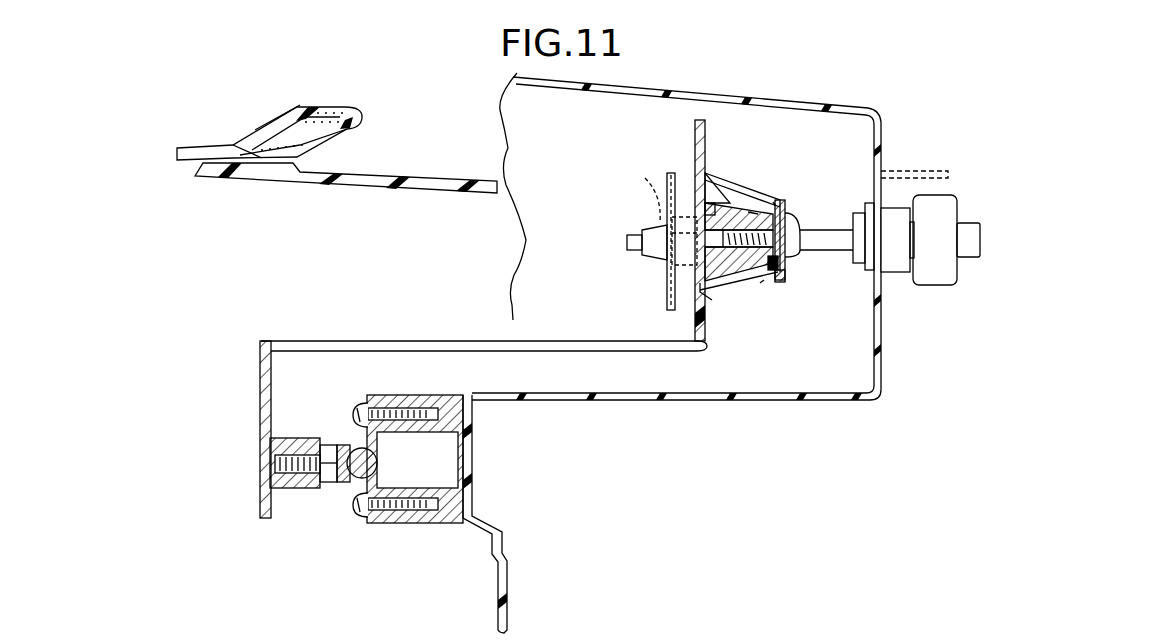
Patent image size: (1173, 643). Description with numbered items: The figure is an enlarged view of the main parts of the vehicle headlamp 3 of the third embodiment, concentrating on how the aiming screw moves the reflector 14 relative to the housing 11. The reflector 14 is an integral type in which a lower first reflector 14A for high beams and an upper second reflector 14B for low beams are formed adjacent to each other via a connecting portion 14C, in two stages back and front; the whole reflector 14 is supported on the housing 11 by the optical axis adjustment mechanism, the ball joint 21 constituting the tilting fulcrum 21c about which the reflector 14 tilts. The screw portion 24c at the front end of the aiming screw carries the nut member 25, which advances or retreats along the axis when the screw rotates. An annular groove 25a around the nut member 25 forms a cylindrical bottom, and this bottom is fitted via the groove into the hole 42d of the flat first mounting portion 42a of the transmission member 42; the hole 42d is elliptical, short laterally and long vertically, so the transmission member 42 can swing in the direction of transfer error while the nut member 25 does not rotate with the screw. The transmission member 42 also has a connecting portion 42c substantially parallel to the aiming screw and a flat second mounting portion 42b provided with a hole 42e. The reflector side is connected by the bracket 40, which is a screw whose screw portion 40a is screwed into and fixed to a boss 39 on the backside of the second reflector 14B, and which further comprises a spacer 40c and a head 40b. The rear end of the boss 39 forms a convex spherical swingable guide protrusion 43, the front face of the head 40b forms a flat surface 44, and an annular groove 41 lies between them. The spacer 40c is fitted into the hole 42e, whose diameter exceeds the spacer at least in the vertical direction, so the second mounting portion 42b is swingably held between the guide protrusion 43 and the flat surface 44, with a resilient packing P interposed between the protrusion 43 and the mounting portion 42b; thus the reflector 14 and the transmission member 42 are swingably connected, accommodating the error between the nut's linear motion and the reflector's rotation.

The vehicle headlamp 3 is at (822, 100).
The housing 11 is at (650, 402).
The reflector 14 is at (452, 319).
The first reflector 14A is at (262, 362).
The second reflector 14B is at (695, 340).
The connecting portion 14C is at (374, 341).
The ball joint 21 is at (304, 503).
The tilting fulcrum 21c is at (352, 482).
The screw portion 24c is at (918, 284).
The nut member 25 is at (648, 259).
The annular groove 25a is at (670, 278).
The boss 39 is at (713, 298).
The bracket (screw) 40 is at (854, 261).
The screw portion 40a is at (748, 213).
The head 40b is at (797, 273).
The spacer 40c is at (804, 259).
The annular groove 41 is at (782, 212).
The transmission member 42 is at (760, 190).
The first mounting portion 42a is at (706, 176).
The second mounting portion 42b is at (786, 215).
The connecting portion 42c is at (730, 200).
The hole 42d is at (639, 189).
The hole 42e is at (792, 228).
The swingable guide protrusion 43 is at (705, 222).
The flat surface 44 is at (746, 285).
The packing P is at (776, 203).